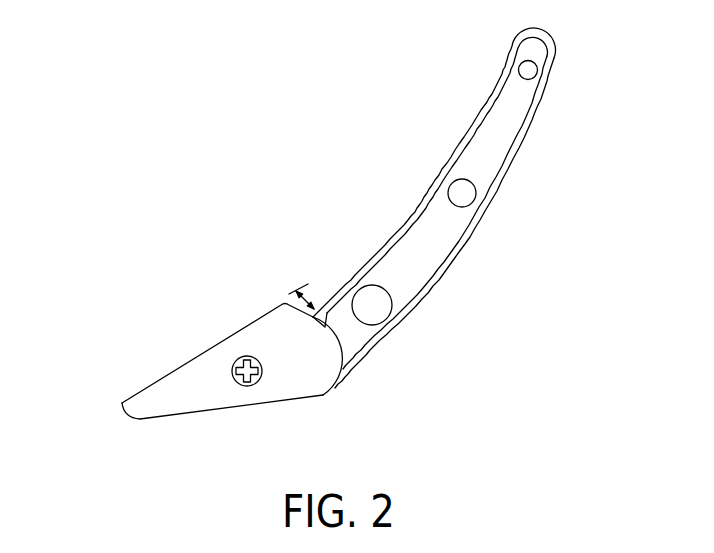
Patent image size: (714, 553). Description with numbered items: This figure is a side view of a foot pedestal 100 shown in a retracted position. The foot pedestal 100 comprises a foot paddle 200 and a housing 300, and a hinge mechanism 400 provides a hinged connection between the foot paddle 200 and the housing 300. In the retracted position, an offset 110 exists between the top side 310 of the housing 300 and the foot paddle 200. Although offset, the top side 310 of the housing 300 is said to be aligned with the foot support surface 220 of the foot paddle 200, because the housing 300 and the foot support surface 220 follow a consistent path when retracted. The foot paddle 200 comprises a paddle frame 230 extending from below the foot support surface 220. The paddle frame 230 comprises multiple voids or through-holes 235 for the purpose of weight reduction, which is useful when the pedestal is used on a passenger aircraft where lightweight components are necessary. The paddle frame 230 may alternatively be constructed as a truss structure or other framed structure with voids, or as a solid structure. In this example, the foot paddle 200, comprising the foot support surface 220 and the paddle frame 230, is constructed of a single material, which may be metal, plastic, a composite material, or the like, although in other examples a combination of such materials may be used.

The foot pedestal 100 is at (167, 155).
The offset 110 is at (308, 296).
The foot paddle 200 is at (495, 138).
The foot support surface 220 is at (436, 180).
The paddle frame 230 is at (428, 228).
The through-holes 235 is at (376, 304).
The housing 300 is at (192, 393).
The top side 310 is at (222, 340).
The hinge mechanism 400 is at (323, 397).